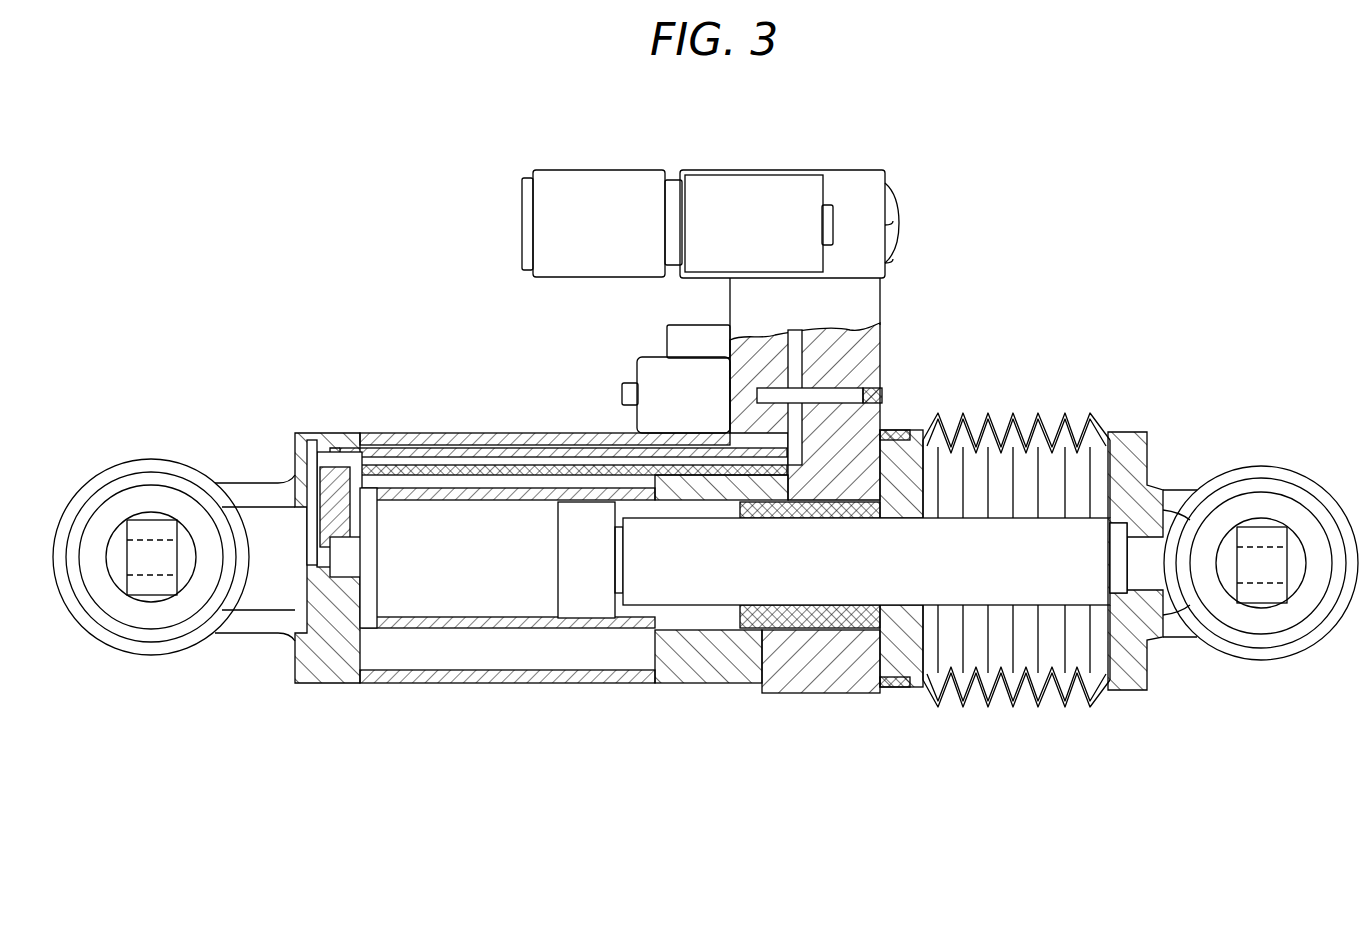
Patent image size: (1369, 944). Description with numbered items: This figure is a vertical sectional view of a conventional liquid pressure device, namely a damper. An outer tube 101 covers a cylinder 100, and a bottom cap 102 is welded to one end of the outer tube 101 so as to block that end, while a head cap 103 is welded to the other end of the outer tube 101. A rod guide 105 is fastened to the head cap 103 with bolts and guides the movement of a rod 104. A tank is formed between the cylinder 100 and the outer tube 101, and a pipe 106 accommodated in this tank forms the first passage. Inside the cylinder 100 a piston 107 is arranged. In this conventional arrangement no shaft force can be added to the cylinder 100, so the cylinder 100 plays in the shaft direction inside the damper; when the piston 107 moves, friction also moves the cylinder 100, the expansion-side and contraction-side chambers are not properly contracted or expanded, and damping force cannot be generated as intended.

The cylinder 100 is at (430, 632).
The outer tube 101 is at (477, 687).
The bottom cap 102 is at (292, 440).
The head cap 103 is at (700, 685).
The rod 104 is at (947, 547).
The rod guide 105 is at (837, 690).
The pipe 106 is at (410, 433).
The piston 107 is at (583, 610).